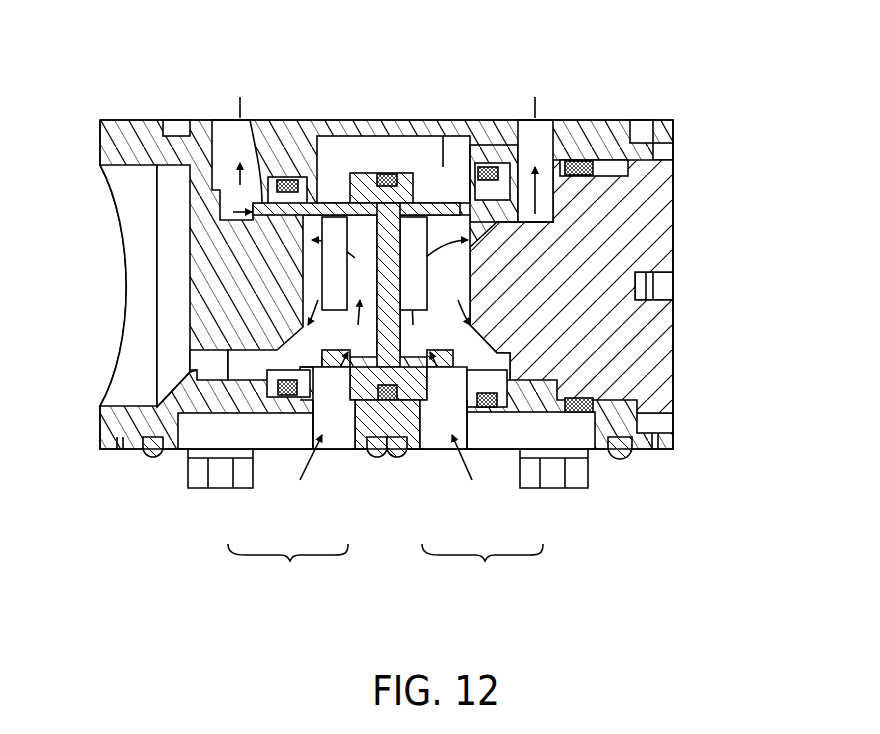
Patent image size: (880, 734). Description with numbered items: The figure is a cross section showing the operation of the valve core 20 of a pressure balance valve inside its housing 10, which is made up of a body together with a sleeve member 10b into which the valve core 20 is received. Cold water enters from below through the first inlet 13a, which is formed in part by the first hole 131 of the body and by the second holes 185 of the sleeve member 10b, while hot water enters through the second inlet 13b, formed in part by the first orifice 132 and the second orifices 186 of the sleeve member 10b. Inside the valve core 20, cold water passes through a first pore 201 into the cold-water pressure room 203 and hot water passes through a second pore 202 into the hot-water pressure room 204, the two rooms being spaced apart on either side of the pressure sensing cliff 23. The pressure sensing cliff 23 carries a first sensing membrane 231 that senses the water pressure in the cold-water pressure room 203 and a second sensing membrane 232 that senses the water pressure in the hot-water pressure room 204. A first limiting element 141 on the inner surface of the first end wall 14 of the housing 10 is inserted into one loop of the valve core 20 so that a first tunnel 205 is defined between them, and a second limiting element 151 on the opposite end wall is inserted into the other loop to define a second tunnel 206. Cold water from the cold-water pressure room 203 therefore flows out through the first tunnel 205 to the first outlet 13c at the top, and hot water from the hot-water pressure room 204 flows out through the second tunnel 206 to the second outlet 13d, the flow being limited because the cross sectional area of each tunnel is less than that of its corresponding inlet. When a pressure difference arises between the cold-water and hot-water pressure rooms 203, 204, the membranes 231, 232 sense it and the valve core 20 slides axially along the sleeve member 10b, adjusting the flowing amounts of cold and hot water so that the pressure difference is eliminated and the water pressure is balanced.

The housing 10 is at (143, 118).
The first outlet 13c is at (217, 118).
The first tunnel 205 is at (255, 118).
The first limiting element 141 is at (262, 148).
The sleeve member 10b is at (340, 172).
The second tunnel 206 is at (447, 118).
The second outlet 13d is at (527, 118).
The second limiting element 151 is at (543, 220).
The valve core 20 is at (232, 212).
The cold-water pressure room 203 is at (312, 256).
The pressure sensing cliff 23 is at (340, 262).
The first sensing membrane 231 is at (330, 290).
The first end wall 14 is at (198, 316).
The hot-water pressure room 204 is at (470, 265).
The second sensing membrane 232 is at (430, 290).
The second pore 202 is at (440, 358).
The second holes 185 is at (320, 413).
The first hole 131 is at (340, 413).
The first pore 201 is at (395, 440).
The second orifices 186 is at (437, 417).
The first orifice 132 is at (462, 420).
The first inlet 13a is at (288, 571).
The second inlet 13b is at (482, 571).